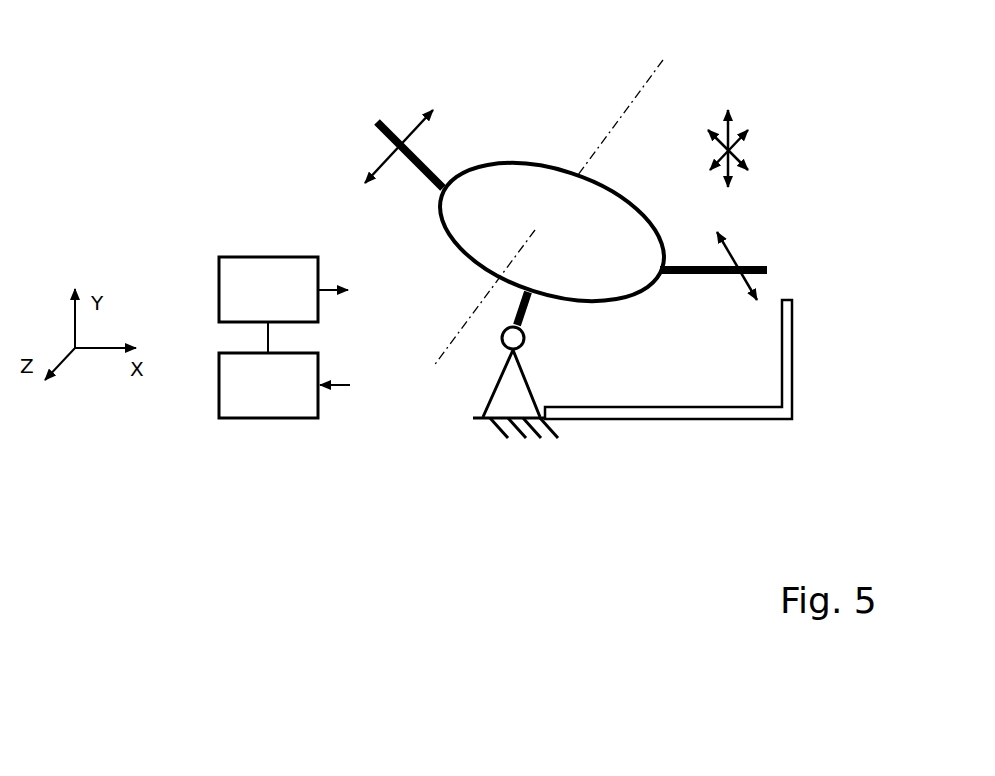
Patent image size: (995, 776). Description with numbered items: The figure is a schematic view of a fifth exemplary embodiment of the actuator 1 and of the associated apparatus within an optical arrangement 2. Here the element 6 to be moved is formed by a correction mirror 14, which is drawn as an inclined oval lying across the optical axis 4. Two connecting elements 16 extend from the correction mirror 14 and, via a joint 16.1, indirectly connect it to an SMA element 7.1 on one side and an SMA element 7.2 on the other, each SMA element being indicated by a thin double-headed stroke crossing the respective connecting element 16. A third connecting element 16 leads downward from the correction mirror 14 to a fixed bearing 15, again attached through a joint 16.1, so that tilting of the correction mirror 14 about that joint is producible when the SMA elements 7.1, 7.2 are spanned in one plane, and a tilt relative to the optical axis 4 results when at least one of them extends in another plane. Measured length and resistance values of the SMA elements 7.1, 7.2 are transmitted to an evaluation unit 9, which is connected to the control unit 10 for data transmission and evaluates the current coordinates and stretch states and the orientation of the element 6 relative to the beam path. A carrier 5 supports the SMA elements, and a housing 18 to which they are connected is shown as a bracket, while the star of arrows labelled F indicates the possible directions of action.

The actuator 1 is at (387, 68).
The optical arrangement 2 is at (317, 35).
The optical axis 4 is at (652, 77).
The carrier 5 is at (668, 387).
The housing 18 is at (693, 422).
The element to be moved 6 is at (552, 217).
The correction mirror 14 is at (550, 167).
The SMA element 7.1 is at (392, 157).
The SMA element 7.2 is at (747, 288).
The evaluation unit 9 is at (284, 370).
The control unit 10 is at (283, 289).
The fixed bearing 15 is at (513, 388).
The connecting element 16 is at (420, 175).
The joint 16.1 is at (500, 347).
The force F is at (740, 153).